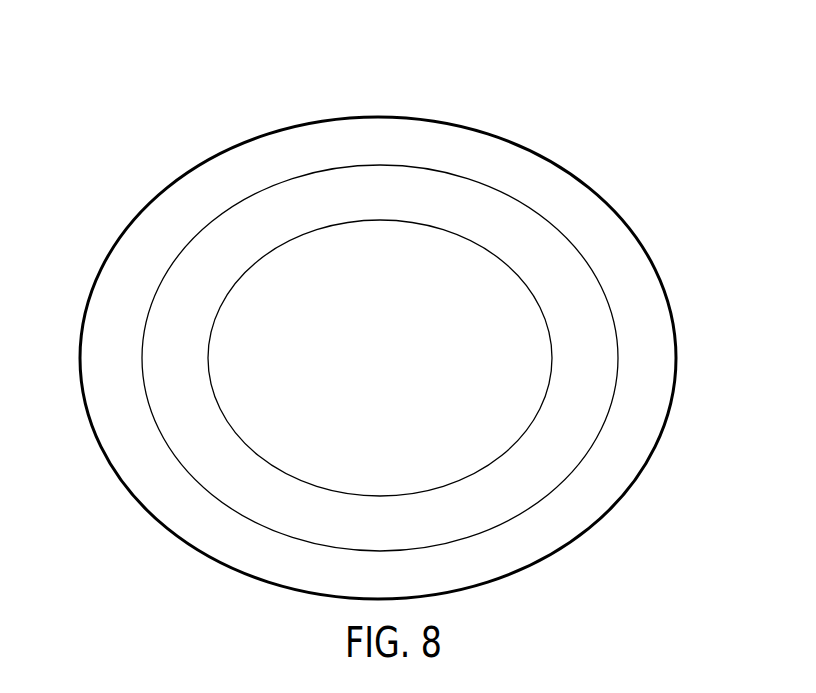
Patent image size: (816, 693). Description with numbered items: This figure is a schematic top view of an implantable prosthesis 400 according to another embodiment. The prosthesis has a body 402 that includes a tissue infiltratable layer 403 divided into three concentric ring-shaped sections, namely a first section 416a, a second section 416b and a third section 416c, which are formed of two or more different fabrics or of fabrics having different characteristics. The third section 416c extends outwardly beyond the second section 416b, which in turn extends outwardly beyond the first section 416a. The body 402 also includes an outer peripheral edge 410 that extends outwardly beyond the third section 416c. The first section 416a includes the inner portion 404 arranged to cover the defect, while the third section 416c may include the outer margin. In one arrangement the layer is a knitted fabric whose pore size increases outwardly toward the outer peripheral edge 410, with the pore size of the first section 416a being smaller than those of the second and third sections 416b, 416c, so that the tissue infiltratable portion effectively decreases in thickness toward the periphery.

The implantable prosthesis 400 is at (608, 85).
The body 402 is at (658, 267).
The tissue infiltratable layer 403 is at (557, 193).
The inner portion 404 is at (388, 355).
The outer peripheral edge 410 is at (105, 265).
The first section 416a is at (482, 425).
The second section 416b is at (595, 357).
The third section 416c is at (643, 442).